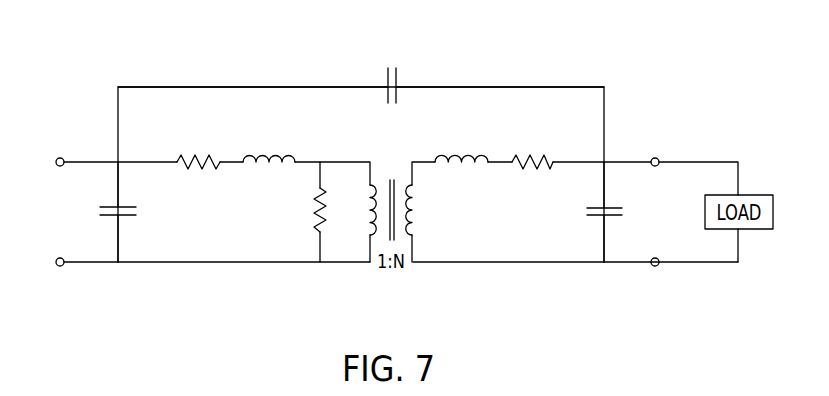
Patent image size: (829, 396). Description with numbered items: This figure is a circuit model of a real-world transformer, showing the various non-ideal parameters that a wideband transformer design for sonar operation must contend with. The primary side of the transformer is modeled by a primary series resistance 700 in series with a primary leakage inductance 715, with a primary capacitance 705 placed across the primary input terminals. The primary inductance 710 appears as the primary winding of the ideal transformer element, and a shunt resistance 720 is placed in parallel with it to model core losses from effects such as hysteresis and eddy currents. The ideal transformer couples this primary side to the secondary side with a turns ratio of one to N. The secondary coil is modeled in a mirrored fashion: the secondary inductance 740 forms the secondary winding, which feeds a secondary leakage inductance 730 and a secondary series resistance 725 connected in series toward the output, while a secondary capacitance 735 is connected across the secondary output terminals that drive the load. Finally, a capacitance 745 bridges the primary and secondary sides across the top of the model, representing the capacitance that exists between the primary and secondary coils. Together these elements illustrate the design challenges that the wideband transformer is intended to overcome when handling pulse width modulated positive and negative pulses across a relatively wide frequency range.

The primary series resistance 700 is at (206, 150).
The primary capacitance 705 is at (98, 208).
The primary inductance 710 is at (368, 229).
The primary leakage inductance 715 is at (296, 150).
The shunt resistance 720 is at (303, 229).
The secondary series resistance 725 is at (552, 152).
The secondary leakage inductance 730 is at (481, 150).
The secondary capacitance 735 is at (582, 211).
The secondary inductance 740 is at (414, 230).
The capacitance 745 is at (388, 67).